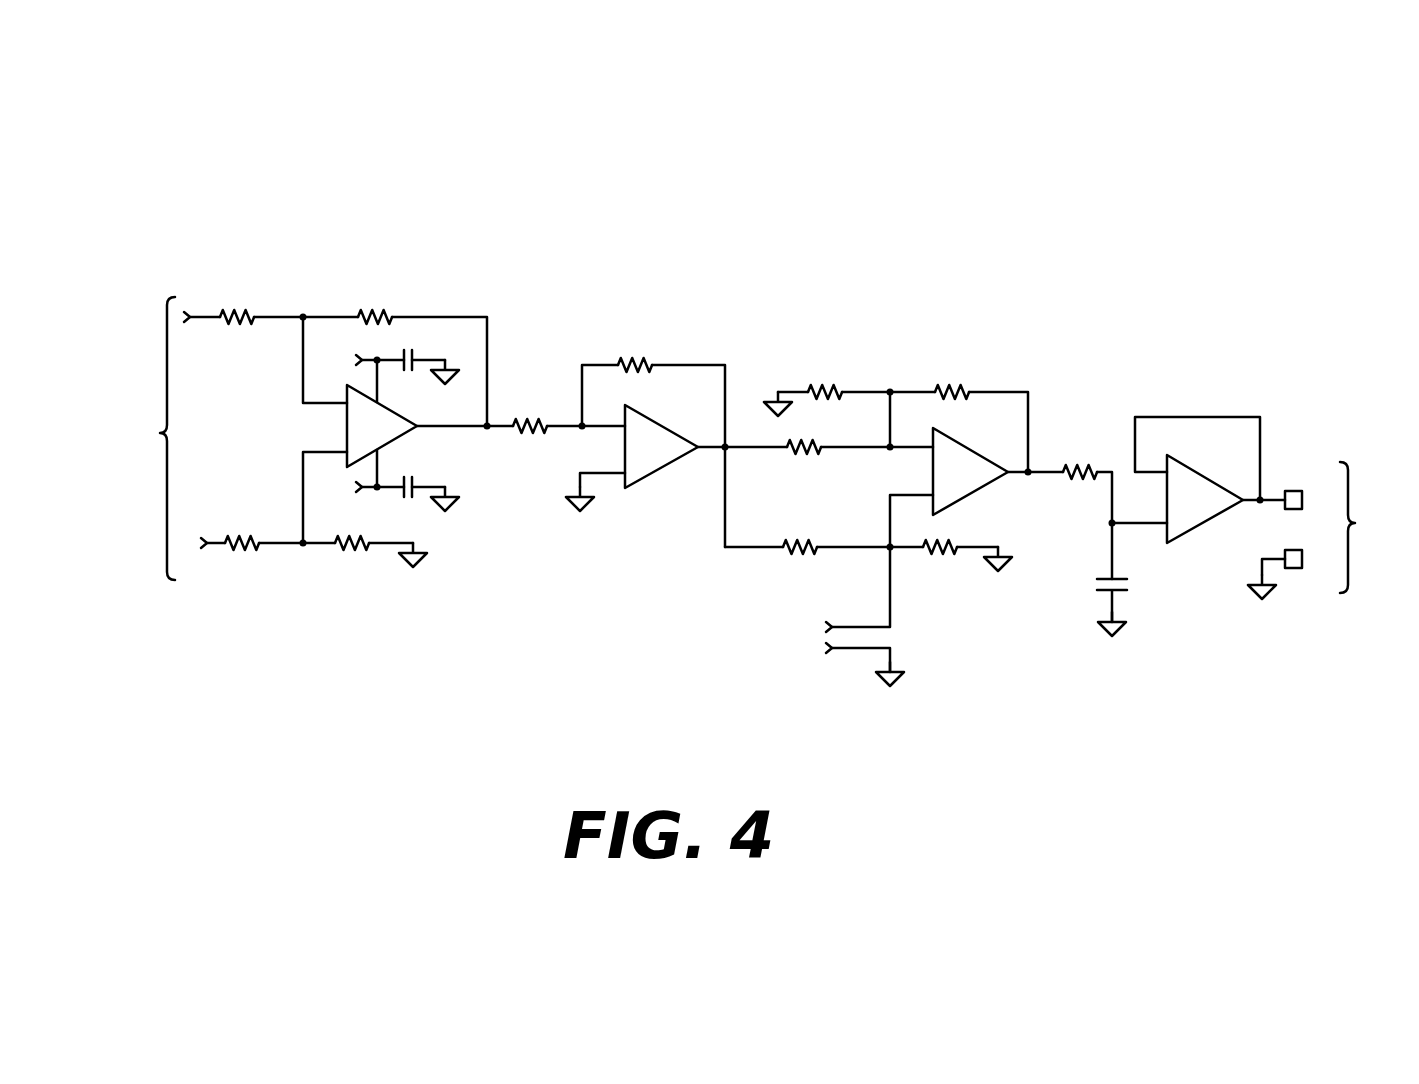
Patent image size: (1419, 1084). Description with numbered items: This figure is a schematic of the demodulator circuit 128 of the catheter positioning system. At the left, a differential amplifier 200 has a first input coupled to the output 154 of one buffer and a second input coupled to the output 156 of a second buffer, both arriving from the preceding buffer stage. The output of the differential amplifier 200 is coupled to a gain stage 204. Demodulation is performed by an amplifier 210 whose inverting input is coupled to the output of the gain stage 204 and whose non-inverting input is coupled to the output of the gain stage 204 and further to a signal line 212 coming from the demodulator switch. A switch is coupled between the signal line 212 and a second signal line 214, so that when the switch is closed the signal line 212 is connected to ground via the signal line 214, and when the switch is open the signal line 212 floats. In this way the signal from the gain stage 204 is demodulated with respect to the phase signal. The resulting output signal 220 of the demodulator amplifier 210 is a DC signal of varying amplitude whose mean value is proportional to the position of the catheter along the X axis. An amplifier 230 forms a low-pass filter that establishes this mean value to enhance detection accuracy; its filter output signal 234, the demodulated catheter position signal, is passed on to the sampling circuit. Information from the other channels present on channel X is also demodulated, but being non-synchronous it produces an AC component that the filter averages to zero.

The demodulator circuit 128 is at (527, 256).
The output of buffer 154 is at (186, 316).
The output of buffer 156 is at (212, 543).
The differential amplifier 200 is at (395, 432).
The gain stage 204 is at (608, 441).
The amplifier 210 is at (876, 471).
The signal line 212 is at (890, 593).
The signal line 214 is at (890, 660).
The output signal 220 is at (1042, 476).
The amplifier 230 is at (1198, 481).
The filter output signal 234 is at (1268, 493).